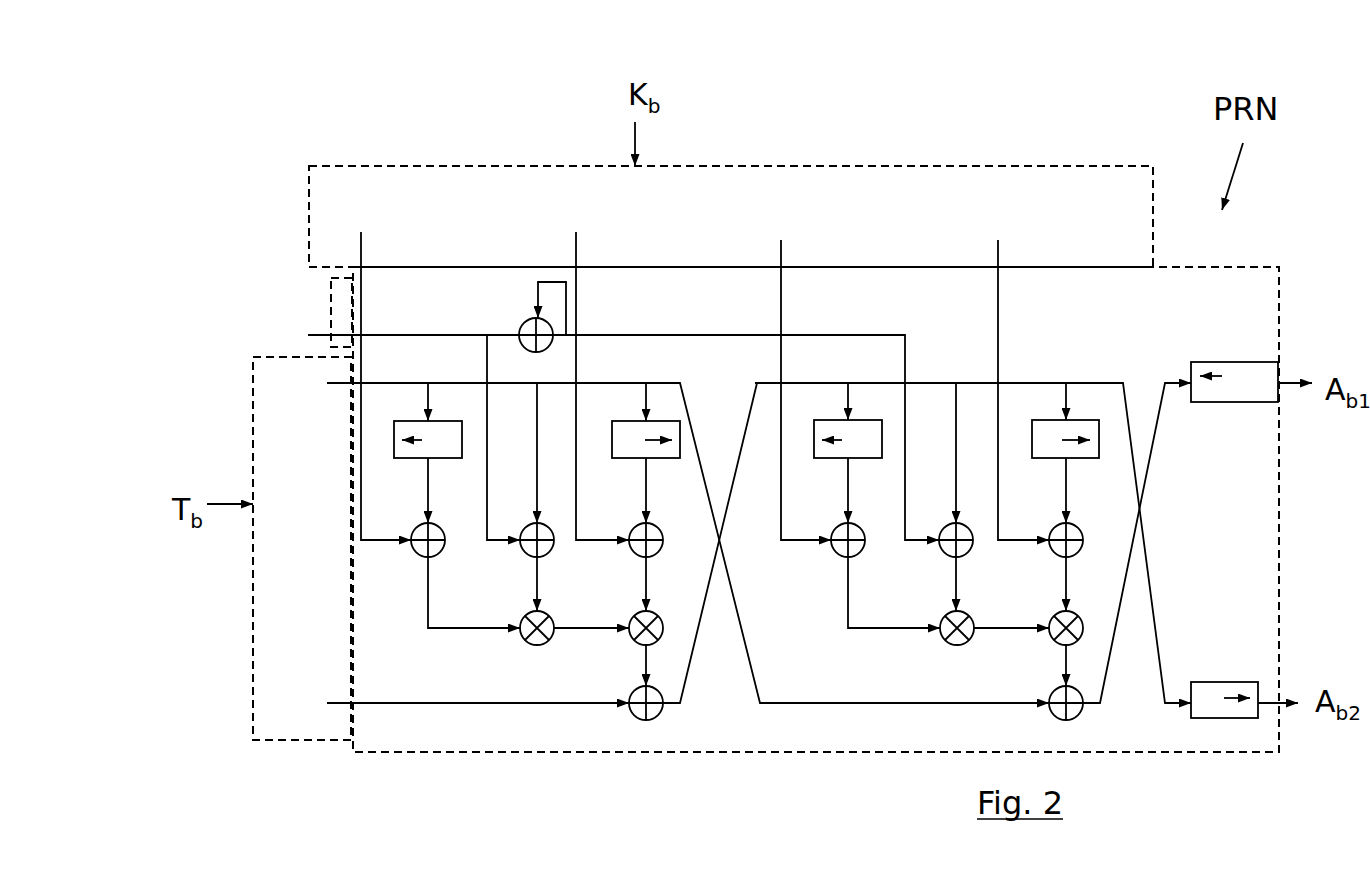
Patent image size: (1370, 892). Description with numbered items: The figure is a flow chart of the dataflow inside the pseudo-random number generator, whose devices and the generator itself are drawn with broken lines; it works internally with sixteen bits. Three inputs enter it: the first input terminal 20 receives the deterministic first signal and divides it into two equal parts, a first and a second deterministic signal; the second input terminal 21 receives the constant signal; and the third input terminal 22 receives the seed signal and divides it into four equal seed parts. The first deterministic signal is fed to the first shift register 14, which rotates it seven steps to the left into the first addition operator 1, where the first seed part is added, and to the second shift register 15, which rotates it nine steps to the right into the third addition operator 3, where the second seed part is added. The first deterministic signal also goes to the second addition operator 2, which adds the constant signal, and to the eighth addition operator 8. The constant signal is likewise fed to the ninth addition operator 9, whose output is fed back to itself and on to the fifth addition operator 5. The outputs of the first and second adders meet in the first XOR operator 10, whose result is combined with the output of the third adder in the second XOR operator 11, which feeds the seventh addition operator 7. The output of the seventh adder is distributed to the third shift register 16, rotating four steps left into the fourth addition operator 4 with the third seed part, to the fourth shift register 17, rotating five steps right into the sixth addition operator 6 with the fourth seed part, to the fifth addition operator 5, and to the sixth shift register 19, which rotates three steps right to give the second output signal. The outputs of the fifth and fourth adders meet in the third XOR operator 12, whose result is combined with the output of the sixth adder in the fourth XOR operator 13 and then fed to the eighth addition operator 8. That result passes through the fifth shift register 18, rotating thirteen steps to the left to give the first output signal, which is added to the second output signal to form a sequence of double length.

The first addition operator 1 is at (462, 577).
The second addition operator 2 is at (575, 577).
The third addition operator 3 is at (677, 577).
The fourth addition operator 4 is at (878, 588).
The fifth addition operator 5 is at (992, 577).
The sixth addition operator 6 is at (1104, 577).
The seventh addition operator 7 is at (688, 733).
The eighth addition operator 8 is at (1105, 733).
The ninth addition operator 9 is at (508, 317).
The first XOR operator 10 is at (500, 666).
The second XOR operator 11 is at (625, 666).
The third XOR operator 12 is at (927, 666).
The fourth XOR operator 13 is at (1040, 666).
The first shift register 14 is at (410, 497).
The second shift register 15 is at (625, 497).
The third shift register 16 is at (828, 497).
The fourth shift register 17 is at (1043, 497).
The fifth shift register 18 is at (1232, 440).
The sixth shift register 19 is at (1233, 666).
The first input terminal 20 is at (333, 727).
The second input terminal 21 is at (328, 300).
The third input terminal 22 is at (433, 190).